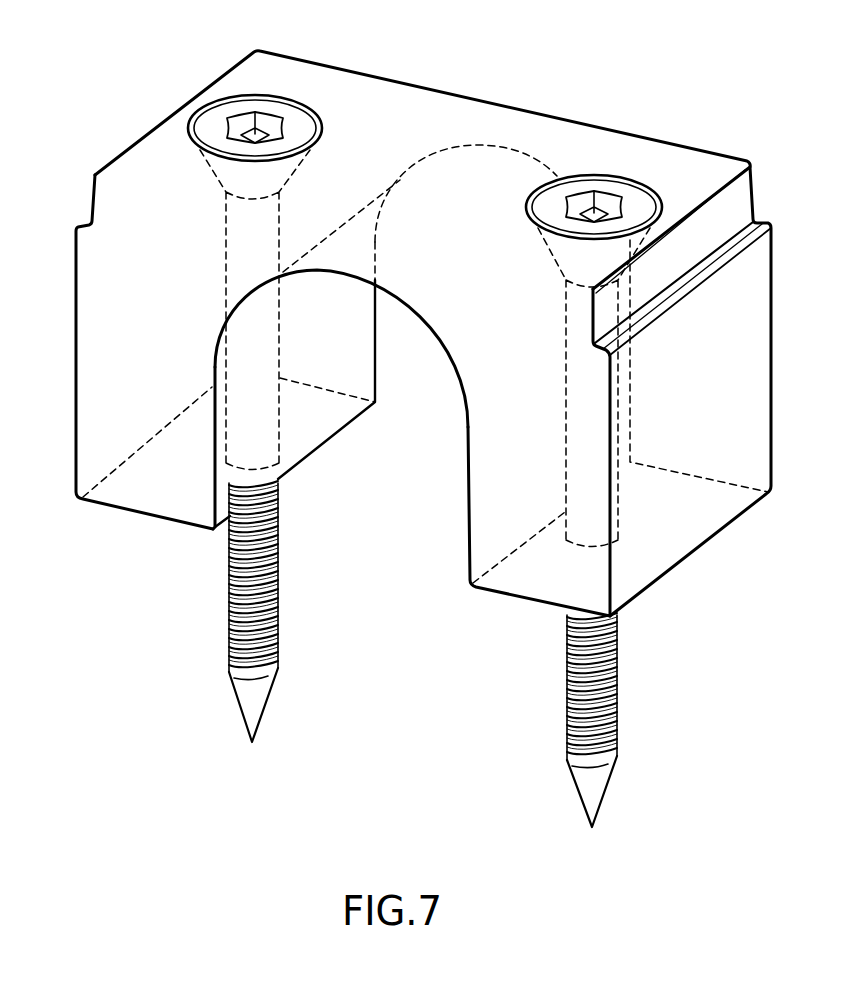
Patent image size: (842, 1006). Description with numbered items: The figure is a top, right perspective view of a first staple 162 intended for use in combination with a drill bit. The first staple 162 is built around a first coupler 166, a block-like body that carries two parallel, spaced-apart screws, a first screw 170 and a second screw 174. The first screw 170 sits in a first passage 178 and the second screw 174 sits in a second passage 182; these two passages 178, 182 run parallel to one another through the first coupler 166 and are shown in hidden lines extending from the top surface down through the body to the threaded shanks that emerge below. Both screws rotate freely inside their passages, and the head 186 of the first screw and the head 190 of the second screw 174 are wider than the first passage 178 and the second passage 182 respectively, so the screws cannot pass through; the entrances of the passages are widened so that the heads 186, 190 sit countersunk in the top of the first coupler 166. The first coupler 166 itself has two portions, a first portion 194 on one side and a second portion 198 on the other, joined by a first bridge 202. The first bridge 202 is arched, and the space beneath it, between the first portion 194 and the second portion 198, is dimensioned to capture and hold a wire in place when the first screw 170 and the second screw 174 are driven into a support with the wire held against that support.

The first staple 162 is at (104, 73).
The first coupler 166 is at (132, 213).
The first screw 170 is at (211, 112).
The second screw 174 is at (642, 197).
The first passage 178 is at (188, 122).
The second passage 182 is at (594, 172).
The head of first screw 186 is at (242, 108).
The head of second screw 190 is at (615, 188).
The first portion 194 is at (131, 369).
The second portion 198 is at (512, 457).
The first bridge 202 is at (343, 262).